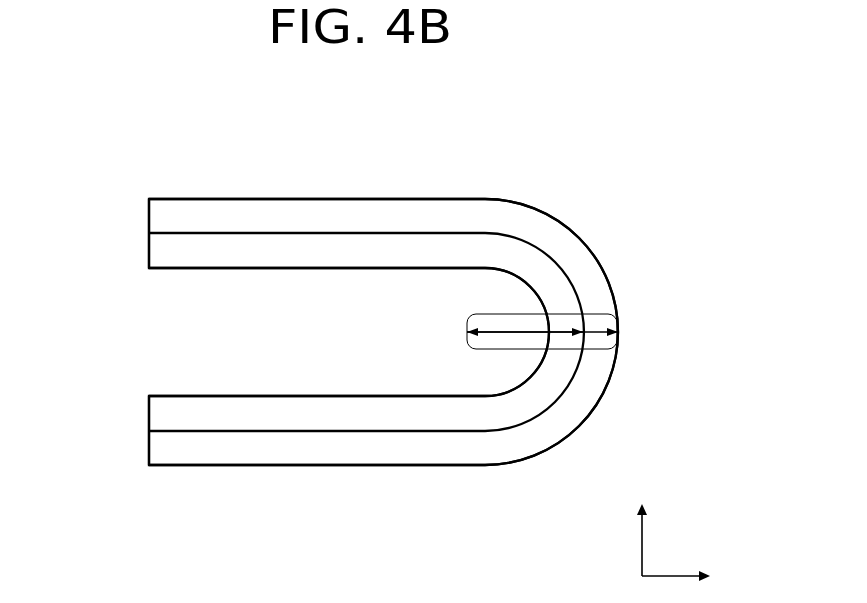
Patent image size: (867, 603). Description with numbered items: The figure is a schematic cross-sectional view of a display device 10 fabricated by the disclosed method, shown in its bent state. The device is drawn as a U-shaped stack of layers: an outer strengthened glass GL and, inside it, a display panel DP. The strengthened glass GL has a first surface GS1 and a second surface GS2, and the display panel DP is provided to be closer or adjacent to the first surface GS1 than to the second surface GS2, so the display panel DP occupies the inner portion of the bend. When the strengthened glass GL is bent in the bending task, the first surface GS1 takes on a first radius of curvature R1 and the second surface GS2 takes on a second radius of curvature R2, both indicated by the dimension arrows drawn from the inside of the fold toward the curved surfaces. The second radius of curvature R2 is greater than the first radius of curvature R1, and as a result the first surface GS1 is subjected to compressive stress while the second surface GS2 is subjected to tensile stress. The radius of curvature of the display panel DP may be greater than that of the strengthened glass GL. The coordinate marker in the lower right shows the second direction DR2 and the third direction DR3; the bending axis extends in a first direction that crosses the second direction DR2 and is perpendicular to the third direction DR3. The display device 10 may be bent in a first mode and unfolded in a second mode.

The display device 10 is at (572, 162).
The second surface GS2 is at (192, 198).
The strengthened glass GL is at (158, 213).
The first surface GS1 is at (208, 233).
The display panel DP is at (158, 413).
The second radius of curvature R2 is at (508, 314).
The first radius of curvature R1 is at (508, 349).
The third direction DR3 is at (641, 528).
The second direction DR2 is at (696, 576).